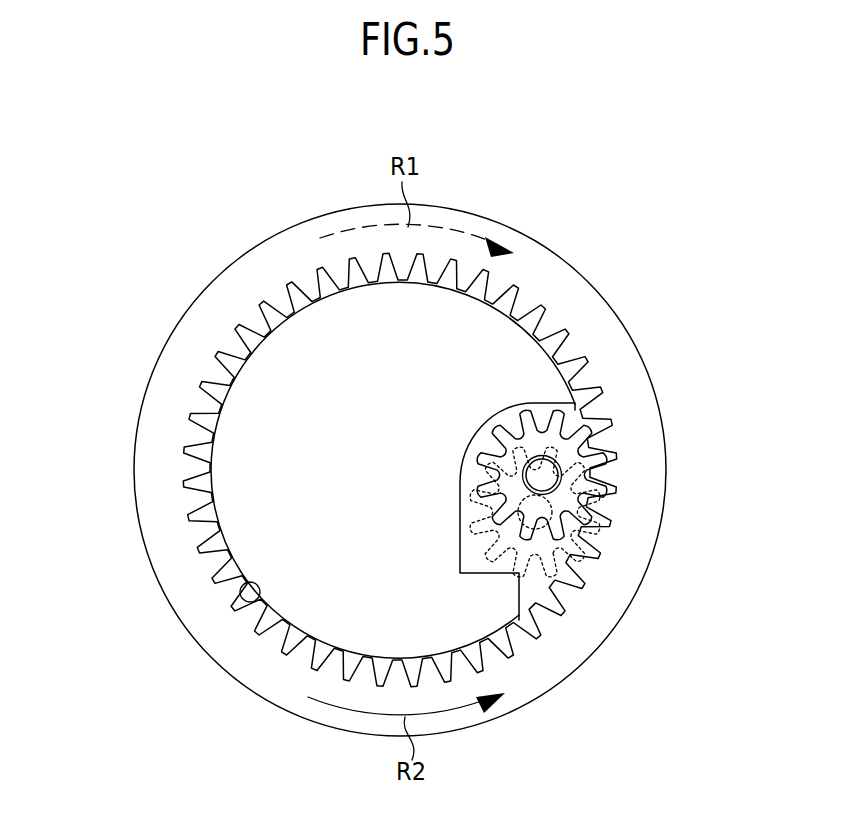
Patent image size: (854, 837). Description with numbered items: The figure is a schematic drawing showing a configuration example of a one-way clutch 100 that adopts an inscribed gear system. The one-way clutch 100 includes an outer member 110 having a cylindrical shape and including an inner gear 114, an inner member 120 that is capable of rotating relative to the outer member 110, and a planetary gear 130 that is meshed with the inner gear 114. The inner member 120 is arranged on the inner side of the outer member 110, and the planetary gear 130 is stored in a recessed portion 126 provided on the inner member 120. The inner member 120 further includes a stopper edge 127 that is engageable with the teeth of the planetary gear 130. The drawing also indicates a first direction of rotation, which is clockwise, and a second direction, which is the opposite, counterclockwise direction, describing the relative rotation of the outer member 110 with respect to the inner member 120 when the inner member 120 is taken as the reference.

The one-way clutch 100 is at (227, 208).
The outer member 110 is at (165, 440).
The inner gear 114 is at (240, 592).
The inner member 120 is at (485, 330).
The recessed portion 126 is at (458, 492).
The stopper edge 127 is at (512, 583).
The planetary gear 130 is at (588, 431).